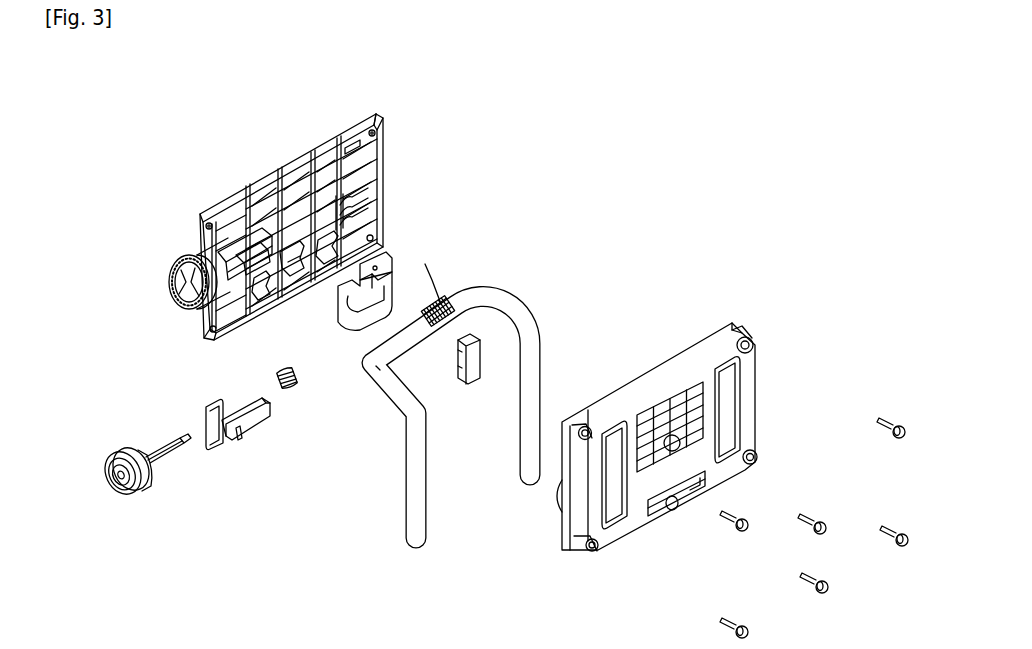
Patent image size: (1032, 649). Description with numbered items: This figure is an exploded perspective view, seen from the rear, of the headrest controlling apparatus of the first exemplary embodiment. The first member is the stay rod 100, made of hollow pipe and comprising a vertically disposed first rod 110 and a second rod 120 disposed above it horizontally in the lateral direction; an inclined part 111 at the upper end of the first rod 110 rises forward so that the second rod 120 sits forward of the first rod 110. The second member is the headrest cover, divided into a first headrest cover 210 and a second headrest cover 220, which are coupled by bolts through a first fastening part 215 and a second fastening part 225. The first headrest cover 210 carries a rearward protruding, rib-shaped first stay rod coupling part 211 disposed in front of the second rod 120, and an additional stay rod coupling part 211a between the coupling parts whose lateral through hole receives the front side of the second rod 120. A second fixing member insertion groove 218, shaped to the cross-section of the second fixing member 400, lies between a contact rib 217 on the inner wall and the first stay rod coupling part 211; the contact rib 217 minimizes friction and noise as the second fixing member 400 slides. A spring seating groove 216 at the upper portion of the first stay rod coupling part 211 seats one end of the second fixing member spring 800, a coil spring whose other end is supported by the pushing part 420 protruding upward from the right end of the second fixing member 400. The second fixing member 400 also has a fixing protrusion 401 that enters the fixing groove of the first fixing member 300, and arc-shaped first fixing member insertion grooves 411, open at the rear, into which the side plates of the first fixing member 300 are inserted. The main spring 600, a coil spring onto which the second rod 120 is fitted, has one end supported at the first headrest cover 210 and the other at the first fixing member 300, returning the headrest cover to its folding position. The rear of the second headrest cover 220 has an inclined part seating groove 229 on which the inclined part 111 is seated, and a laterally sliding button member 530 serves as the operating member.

The stay rod 100 is at (470, 394).
The first rod 110 is at (416, 493).
The inclined part 111 is at (380, 378).
The second rod 120 is at (400, 336).
The first headrest cover 210 is at (395, 100).
The first stay rod coupling part 211 is at (325, 253).
The additional stay rod coupling part 211a is at (284, 262).
The first fastening part 215 is at (385, 126).
The spring seating groove 216 is at (253, 250).
The contact rib 217 is at (210, 255).
The second fixing member insertion groove 218 is at (228, 247).
The second headrest cover 220 is at (697, 420).
The second fastening part 225 is at (752, 344).
The inclined part seating groove 229 is at (628, 468).
The first fixing member 300 is at (395, 262).
The second fixing member 400 is at (209, 434).
The fixing protrusion 401 is at (255, 424).
The first fixing member insertion groove 411 is at (238, 438).
The pushing part 420 is at (208, 430).
The button member 530 is at (120, 446).
The main spring 600 is at (447, 300).
The second fixing member spring 800 is at (276, 376).